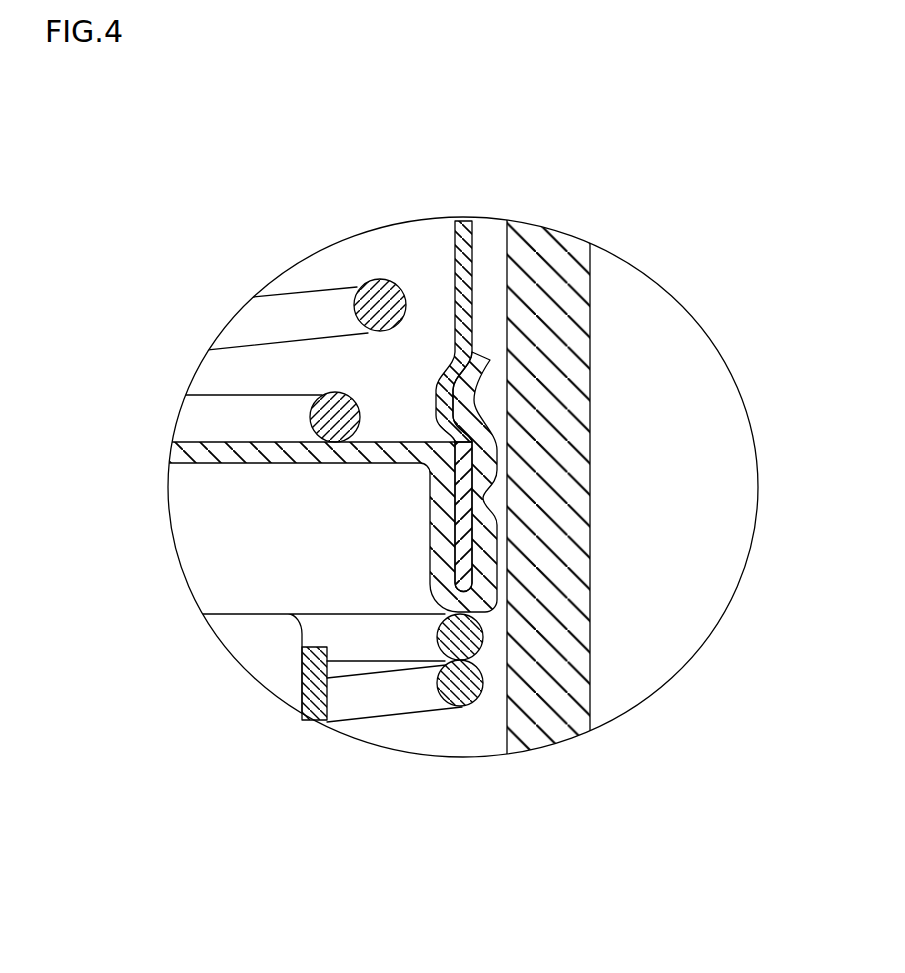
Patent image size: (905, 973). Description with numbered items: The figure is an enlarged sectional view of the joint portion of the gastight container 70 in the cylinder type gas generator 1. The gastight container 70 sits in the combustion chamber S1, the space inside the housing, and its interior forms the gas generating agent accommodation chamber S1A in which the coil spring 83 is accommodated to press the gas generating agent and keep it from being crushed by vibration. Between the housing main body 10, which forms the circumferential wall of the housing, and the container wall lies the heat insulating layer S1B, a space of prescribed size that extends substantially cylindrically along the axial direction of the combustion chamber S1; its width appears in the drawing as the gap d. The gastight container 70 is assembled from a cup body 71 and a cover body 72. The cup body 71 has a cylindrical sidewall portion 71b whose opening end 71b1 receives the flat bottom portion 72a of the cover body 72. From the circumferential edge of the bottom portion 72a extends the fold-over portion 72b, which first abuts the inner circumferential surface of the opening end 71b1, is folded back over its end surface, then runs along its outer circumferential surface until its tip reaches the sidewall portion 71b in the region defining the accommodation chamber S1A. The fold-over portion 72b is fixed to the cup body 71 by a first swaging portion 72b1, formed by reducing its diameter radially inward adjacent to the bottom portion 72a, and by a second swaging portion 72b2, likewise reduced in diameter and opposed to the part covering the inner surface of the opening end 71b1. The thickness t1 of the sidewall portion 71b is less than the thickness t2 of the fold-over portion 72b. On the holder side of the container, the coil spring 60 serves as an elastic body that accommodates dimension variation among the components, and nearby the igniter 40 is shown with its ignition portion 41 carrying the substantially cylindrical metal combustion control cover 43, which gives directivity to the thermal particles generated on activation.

The cylinder type gas generator 1 is at (826, 94).
The housing main body 10 is at (555, 660).
The igniter 40 is at (232, 608).
The ignition portion 41 is at (263, 652).
The combustion control cover 43 is at (312, 685).
The coil spring 60 is at (387, 695).
The gastight container 70 is at (400, 169).
The cup body 71 is at (455, 292).
The sidewall portion 71b is at (467, 318).
The opening end 71b1 is at (465, 560).
The cover body 72 is at (388, 440).
The bottom portion 72a is at (275, 453).
The fold-over portion 72b is at (485, 472).
The first swaging portion 72b1 is at (462, 407).
The second swaging portion 72b2 is at (480, 517).
The coil spring 83 is at (283, 320).
The combustion chamber S1 is at (303, 277).
The gas generating agent accommodation chamber S1A is at (242, 373).
The heat insulating layer S1B is at (490, 276).
The gap d is at (507, 222).
The thickness of sidewall portion t1 is at (455, 221).
The thickness of fold-over portion t2 is at (170, 463).